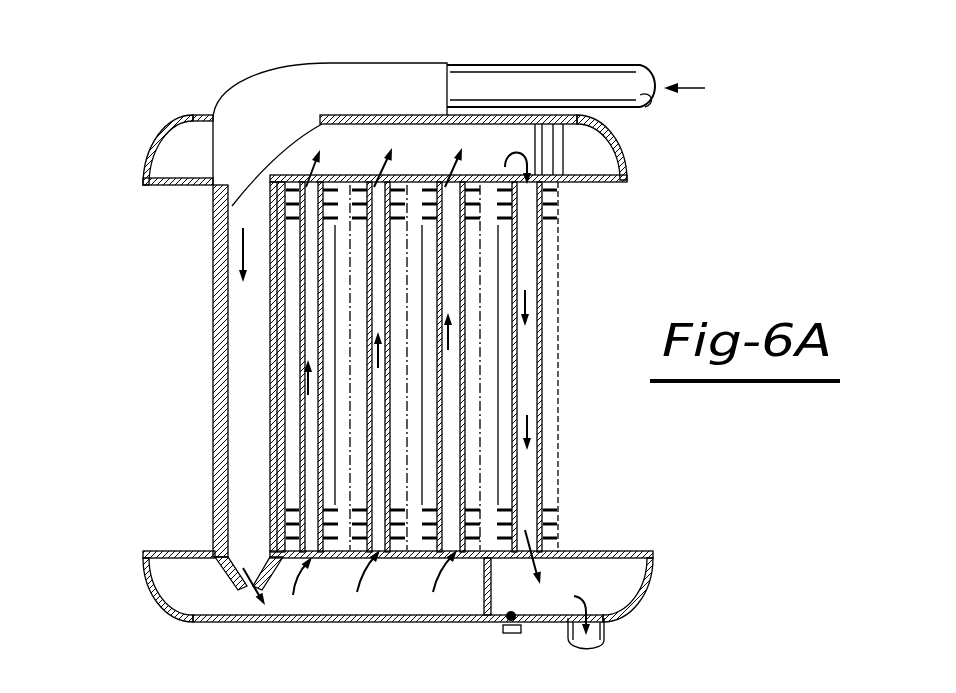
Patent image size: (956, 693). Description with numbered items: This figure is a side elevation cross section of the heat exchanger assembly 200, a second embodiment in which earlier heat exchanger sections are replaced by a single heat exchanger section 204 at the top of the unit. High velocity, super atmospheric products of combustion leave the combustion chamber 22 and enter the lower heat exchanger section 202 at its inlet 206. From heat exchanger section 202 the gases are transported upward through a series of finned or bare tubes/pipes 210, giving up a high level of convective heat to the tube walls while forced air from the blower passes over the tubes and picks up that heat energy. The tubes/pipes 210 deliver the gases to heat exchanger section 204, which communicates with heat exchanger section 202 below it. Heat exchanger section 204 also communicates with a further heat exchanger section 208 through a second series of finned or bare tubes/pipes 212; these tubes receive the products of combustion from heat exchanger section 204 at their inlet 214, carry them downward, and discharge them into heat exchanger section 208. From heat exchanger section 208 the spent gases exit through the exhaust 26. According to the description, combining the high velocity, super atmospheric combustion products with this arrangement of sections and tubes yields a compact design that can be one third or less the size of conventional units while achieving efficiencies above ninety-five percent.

The heat exchanger assembly 200 is at (178, 70).
The combustion chamber 22 is at (253, 319).
The heat exchanger section 204 is at (365, 147).
The inlet 214 is at (538, 182).
The finned or bare tubes/pipes 212 is at (523, 237).
The finned or bare tubes/pipes 210 is at (378, 267).
The inlet 206 is at (247, 570).
The heat exchanger section 202 is at (303, 603).
The heat exchanger section 208 is at (583, 568).
The exhaust 26 is at (606, 644).